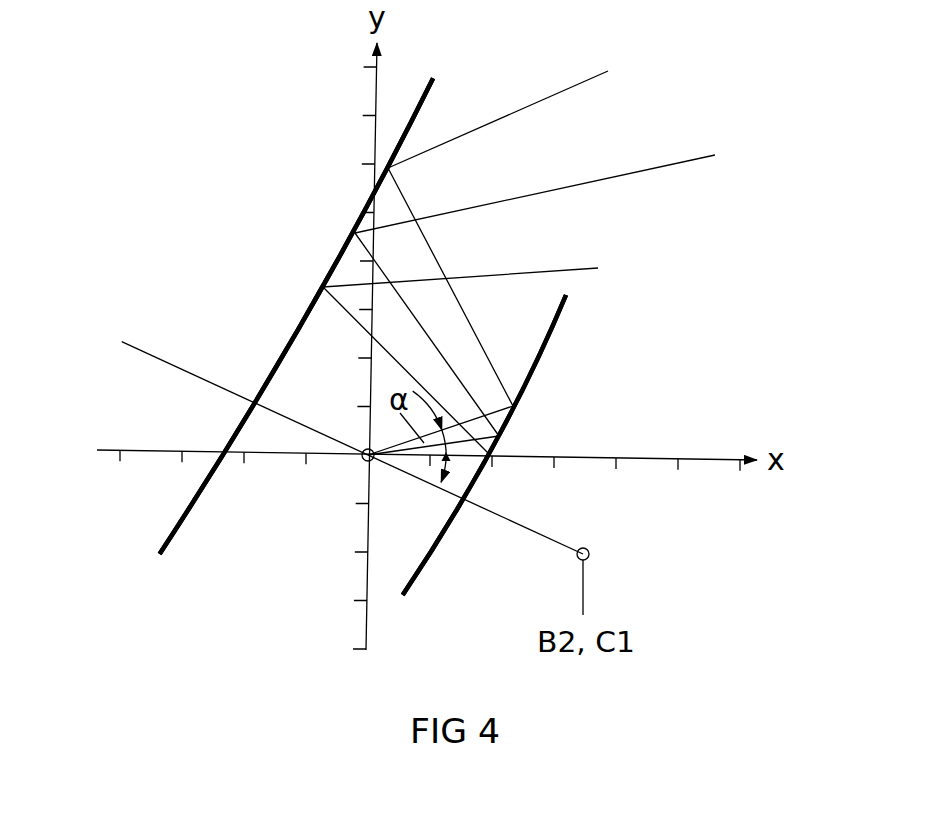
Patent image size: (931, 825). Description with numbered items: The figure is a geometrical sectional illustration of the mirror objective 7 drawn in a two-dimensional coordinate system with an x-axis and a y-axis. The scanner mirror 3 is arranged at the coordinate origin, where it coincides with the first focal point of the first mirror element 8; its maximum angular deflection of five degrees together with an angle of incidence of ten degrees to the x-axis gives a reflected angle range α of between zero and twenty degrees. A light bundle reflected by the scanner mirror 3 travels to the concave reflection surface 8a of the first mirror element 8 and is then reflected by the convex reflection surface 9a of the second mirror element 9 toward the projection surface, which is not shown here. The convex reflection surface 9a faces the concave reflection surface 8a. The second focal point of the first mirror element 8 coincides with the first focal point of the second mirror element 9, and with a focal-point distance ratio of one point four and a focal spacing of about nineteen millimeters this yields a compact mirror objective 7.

The scanner mirror 3 is at (362, 461).
The mirror objective 7 is at (682, 278).
The first mirror element 8 is at (528, 377).
The concave reflection surface 8a is at (538, 357).
The second mirror element 9 is at (238, 427).
The convex reflection surface 9a is at (180, 535).